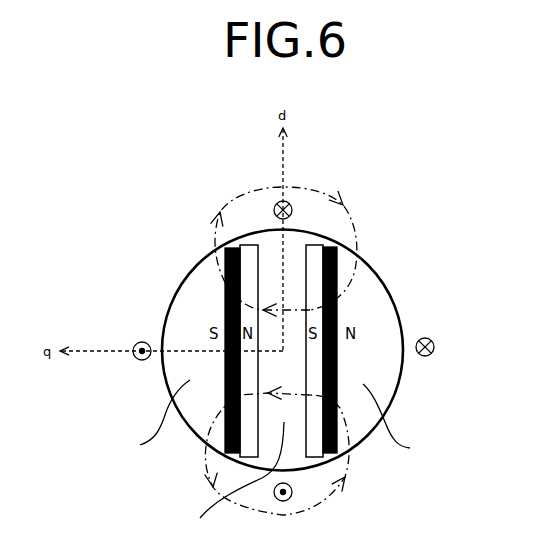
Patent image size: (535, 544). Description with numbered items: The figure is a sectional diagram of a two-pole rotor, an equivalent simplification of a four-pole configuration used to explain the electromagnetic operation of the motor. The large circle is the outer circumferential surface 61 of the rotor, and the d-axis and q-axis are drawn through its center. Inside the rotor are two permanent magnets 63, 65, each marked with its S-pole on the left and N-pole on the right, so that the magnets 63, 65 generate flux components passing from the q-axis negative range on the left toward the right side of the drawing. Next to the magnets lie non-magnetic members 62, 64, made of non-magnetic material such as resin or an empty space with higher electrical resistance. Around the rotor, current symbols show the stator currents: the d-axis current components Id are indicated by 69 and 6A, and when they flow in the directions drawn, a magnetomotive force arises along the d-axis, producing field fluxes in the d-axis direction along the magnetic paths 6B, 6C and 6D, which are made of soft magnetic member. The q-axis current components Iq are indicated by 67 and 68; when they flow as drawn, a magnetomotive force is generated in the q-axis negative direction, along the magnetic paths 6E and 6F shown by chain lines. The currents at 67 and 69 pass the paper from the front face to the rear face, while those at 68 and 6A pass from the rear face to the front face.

The outer circumferential surface of the rotor 61 is at (404, 313).
The non-magnetic member 62 is at (318, 244).
The permanent magnet 63 is at (338, 307).
The non-magnetic member 64 is at (252, 249).
The permanent magnet 65 is at (225, 306).
The q-axis current component Iq 67 is at (291, 204).
The q-axis current component Iq 68 is at (290, 499).
The d-axis current component Id 69 is at (432, 339).
The d-axis current component Id 6A is at (135, 343).
The magnetic path 6B is at (151, 418).
The magnetic path 6C is at (232, 479).
The magnetic path 6D is at (399, 422).
The magnetic path 6E is at (248, 191).
The magnetic path 6F is at (203, 460).